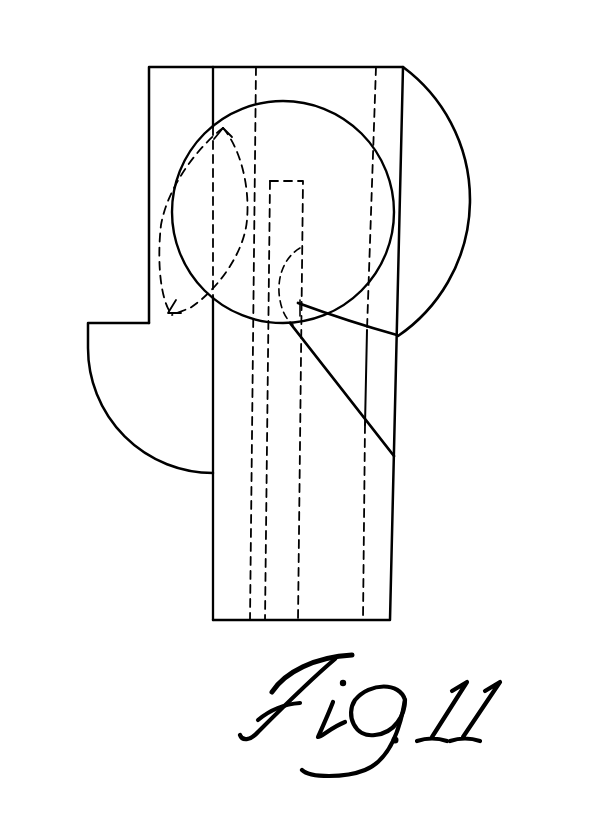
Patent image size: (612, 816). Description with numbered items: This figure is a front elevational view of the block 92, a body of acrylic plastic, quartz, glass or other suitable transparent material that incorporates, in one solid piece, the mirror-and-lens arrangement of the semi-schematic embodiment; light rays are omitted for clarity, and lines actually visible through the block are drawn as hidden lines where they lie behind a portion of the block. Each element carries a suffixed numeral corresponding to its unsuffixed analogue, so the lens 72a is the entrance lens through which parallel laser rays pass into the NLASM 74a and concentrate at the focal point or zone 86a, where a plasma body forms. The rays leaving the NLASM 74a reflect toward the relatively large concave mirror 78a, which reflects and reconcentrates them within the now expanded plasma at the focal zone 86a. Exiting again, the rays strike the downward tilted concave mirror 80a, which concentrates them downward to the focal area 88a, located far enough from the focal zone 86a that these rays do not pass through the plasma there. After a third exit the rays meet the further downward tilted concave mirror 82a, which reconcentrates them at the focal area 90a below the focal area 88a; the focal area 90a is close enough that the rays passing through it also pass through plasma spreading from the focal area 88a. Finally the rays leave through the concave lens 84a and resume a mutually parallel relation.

The block 92 is at (463, 126).
The concave mirror 78a is at (465, 185).
The lens 72a is at (334, 106).
The NLASM 74a is at (303, 181).
The focal zone 86a is at (285, 225).
The concave mirror 82a is at (297, 250).
The focal area 88a is at (292, 318).
The focal area 90a is at (296, 324).
The concave mirror 80a is at (197, 305).
The concave lens 84a is at (150, 458).